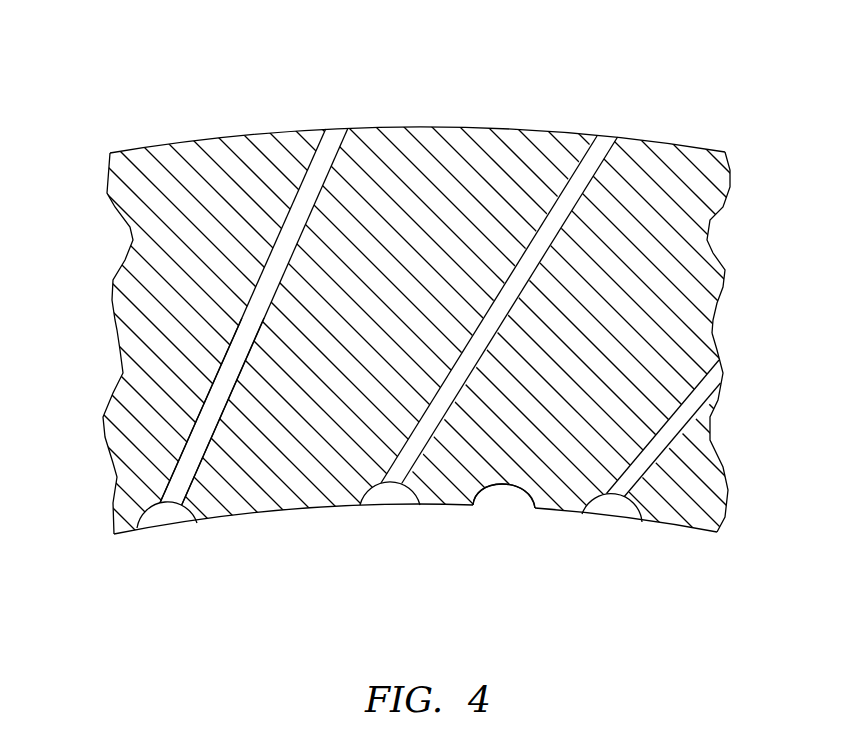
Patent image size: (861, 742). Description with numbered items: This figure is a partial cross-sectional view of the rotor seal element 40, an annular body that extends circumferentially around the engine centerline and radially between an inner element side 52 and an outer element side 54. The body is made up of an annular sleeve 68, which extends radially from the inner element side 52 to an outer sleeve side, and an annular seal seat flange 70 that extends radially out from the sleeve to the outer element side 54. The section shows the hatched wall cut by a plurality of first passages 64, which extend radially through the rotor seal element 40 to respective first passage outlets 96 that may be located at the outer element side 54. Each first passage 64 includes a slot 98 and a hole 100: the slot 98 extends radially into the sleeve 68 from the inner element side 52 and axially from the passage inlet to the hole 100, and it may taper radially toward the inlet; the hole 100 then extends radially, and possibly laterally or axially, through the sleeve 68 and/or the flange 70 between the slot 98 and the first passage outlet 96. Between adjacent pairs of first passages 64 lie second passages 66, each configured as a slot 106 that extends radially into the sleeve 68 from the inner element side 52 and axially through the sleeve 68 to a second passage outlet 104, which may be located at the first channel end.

The rotor seal element 40 is at (752, 88).
The inner element side 52 is at (687, 530).
The outer element side 54 is at (699, 147).
The first passages 64 is at (699, 396).
The second passages 66 is at (509, 515).
The annular sleeve 68 is at (729, 493).
The annular seal seat flange 70 is at (712, 244).
The first passage outlet 96 is at (342, 128).
The slot 98 is at (178, 518).
The hole 100 is at (193, 453).
The second passage outlet 104 is at (528, 508).
The slot 106 is at (489, 503).